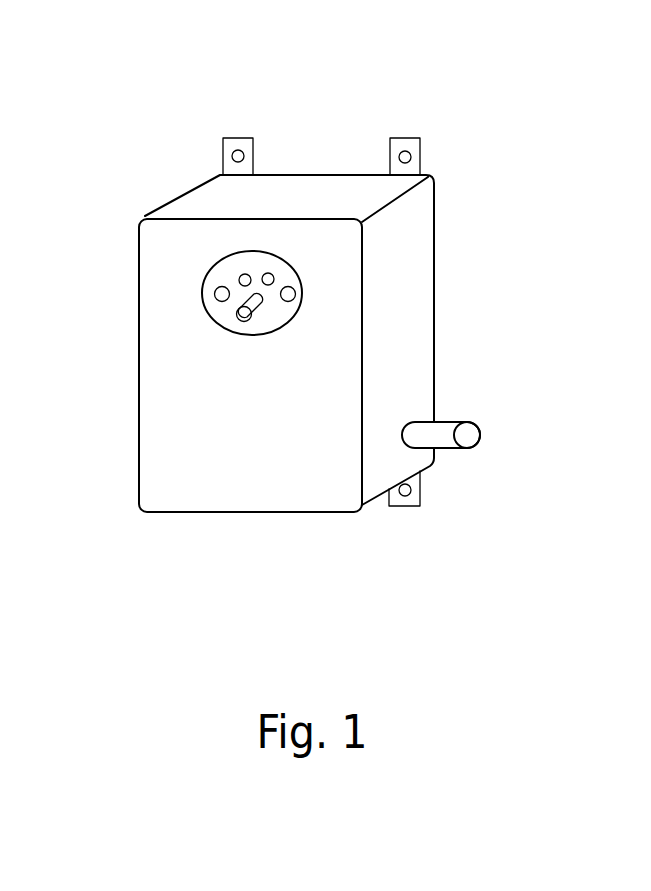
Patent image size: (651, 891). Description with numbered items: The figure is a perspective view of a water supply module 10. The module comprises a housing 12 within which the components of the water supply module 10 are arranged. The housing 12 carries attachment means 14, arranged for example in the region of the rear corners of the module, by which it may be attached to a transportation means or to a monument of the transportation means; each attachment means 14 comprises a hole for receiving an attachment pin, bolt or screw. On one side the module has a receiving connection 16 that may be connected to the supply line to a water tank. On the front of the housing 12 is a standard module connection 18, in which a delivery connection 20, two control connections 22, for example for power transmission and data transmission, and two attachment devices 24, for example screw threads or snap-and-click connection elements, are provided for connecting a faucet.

The water supply module 10 is at (496, 109).
The housing 12 is at (174, 469).
The attachment means 14 is at (248, 135).
The receiving connection 16 is at (463, 422).
The standard module connection 18 is at (178, 285).
The delivery connection 20 is at (237, 314).
The control connections 22 is at (245, 273).
The attachment devices 24 is at (215, 287).